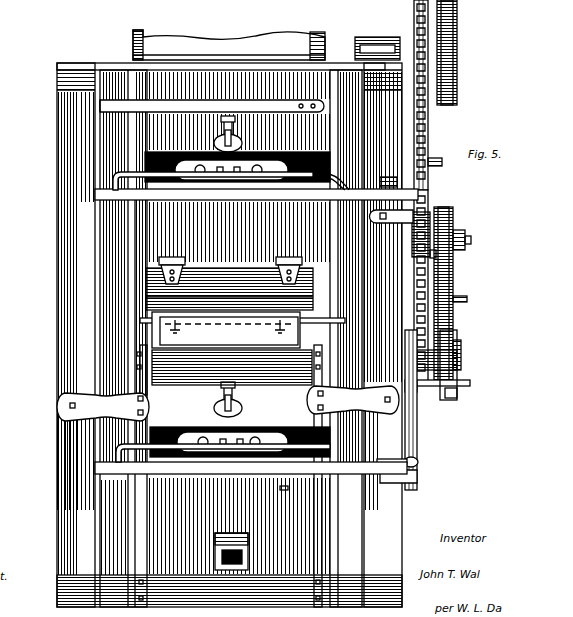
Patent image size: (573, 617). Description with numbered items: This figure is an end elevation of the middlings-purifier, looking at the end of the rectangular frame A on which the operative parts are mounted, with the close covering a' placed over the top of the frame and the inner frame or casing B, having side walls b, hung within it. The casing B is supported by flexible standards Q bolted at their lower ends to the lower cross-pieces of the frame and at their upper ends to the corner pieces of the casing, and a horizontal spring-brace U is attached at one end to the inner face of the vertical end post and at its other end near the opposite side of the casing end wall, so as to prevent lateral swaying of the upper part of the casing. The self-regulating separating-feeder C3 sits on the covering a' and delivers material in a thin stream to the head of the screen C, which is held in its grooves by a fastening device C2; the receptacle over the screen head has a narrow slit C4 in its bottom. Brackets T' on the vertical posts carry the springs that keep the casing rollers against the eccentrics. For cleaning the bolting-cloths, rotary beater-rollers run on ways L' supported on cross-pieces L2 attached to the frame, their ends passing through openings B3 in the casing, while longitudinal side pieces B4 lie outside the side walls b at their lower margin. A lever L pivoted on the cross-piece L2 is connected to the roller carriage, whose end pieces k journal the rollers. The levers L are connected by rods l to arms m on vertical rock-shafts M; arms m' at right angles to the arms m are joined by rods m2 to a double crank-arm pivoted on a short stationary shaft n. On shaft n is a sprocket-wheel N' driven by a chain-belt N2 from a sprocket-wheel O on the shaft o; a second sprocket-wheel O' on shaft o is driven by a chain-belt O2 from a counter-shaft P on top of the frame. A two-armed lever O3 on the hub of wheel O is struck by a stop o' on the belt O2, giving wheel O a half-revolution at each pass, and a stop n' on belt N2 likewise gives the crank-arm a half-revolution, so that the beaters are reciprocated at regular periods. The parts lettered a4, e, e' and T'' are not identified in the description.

The rectangular frame A is at (214, 335).
The close covering a' is at (221, 56).
The box a4 is at (222, 551).
The side walls b is at (239, 111).
The inner frame or casing B is at (240, 242).
The openings B3 is at (229, 304).
The longitudinal side pieces B4 is at (229, 276).
The screen C is at (237, 160).
The fastening device C2 is at (240, 135).
The self-regulating separating-feeder C3 is at (229, 45).
The narrow slit C4 is at (240, 429).
The frame e is at (232, 348).
The adjusting pins e' is at (227, 330).
The end pieces k is at (231, 306).
The rods l is at (293, 485).
The lever L is at (221, 332).
The ways L' is at (245, 294).
The cross-pieces L2 is at (268, 489).
The arms m is at (392, 453).
The arms m' is at (394, 220).
The rods m2 is at (457, 398).
The vertical rock-shafts M is at (407, 410).
The short stationary shaft n is at (467, 355).
The stop n' is at (466, 305).
The sprocket-wheel N' is at (450, 366).
The chain-belt N2 is at (456, 289).
The shaft o is at (469, 240).
The stop o' is at (442, 165).
The sprocket-wheel O is at (454, 293).
The second sprocket-wheel O' is at (432, 283).
The chain-belt O2 is at (434, 95).
The lever O3 is at (436, 262).
The counter-shaft P is at (437, 52).
The flexible standards Q is at (231, 338).
The brackets T' is at (103, 407).
The right handle T'' is at (353, 400).
The horizontal spring-brace U is at (212, 103).